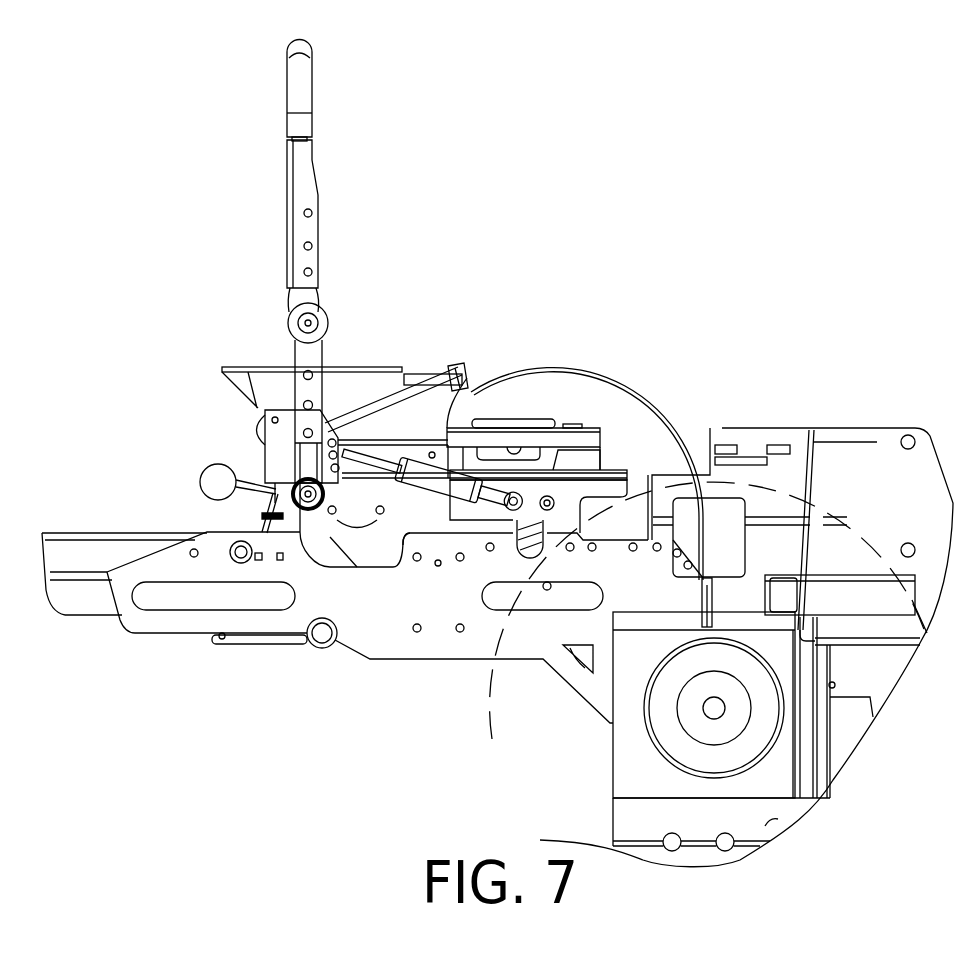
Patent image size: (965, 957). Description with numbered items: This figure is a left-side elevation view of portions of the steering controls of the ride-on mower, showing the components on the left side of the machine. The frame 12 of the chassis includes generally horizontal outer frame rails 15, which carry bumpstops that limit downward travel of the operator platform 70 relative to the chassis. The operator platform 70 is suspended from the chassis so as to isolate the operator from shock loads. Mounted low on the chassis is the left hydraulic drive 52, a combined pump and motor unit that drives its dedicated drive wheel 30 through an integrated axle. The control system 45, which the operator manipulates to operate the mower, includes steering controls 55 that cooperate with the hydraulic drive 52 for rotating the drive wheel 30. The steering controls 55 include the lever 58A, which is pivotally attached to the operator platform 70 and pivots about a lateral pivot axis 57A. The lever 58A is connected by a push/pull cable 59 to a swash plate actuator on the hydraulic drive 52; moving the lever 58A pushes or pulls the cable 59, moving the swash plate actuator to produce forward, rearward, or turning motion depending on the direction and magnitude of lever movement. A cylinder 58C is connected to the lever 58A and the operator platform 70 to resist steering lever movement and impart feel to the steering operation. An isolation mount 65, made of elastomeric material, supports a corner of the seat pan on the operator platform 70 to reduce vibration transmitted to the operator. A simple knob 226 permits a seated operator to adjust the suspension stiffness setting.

The frame 12 is at (130, 650).
The outer frame rail 15 is at (97, 609).
The drive wheel 30 is at (473, 697).
The control system 45 is at (466, 181).
The hydraulic drive 52 is at (640, 757).
The steering controls 55 is at (327, 93).
The lateral pivot axis 57A is at (275, 490).
The lever 58A is at (305, 262).
The cylinder 58C is at (414, 502).
The push/pull cable 59 is at (573, 355).
The isolation mount 65 is at (588, 462).
The operator platform 70 is at (267, 514).
The knob 226 is at (218, 478).